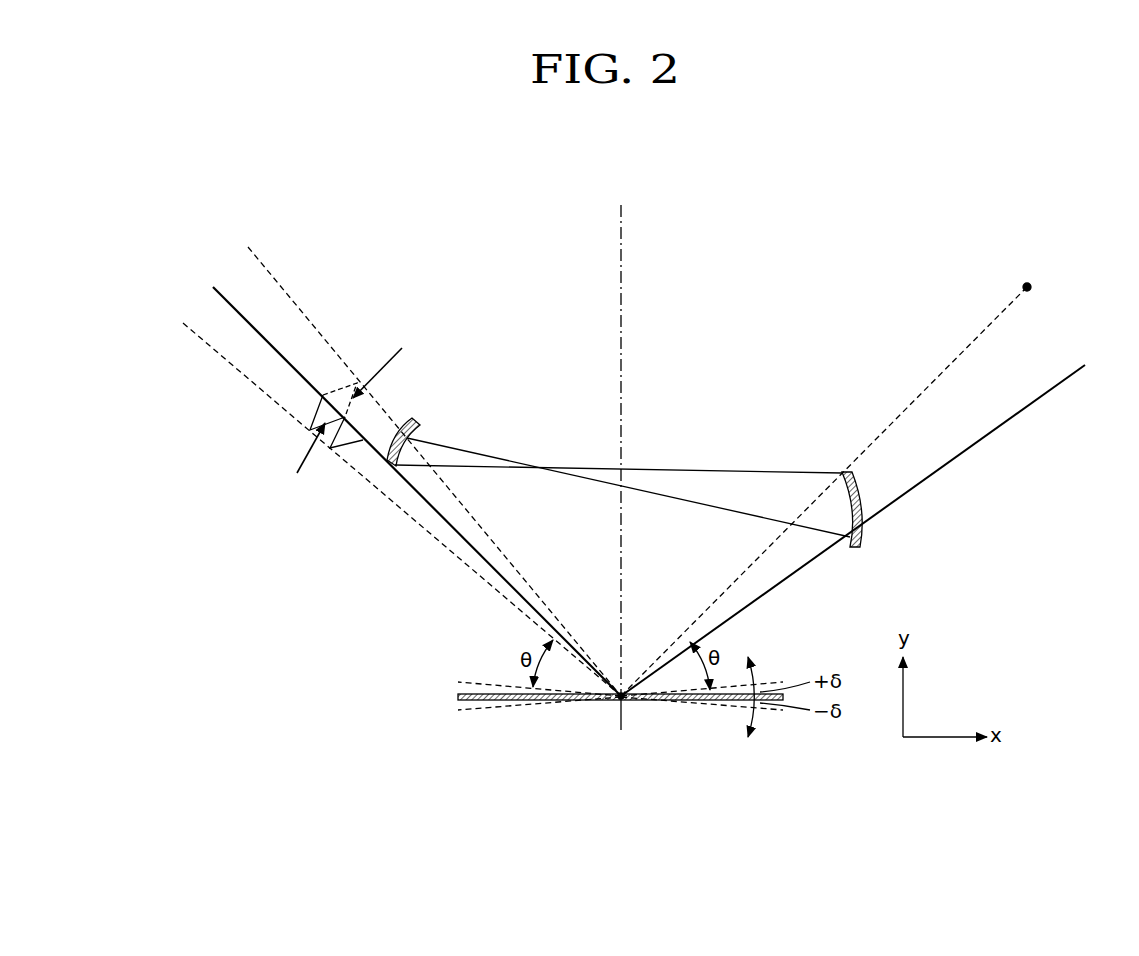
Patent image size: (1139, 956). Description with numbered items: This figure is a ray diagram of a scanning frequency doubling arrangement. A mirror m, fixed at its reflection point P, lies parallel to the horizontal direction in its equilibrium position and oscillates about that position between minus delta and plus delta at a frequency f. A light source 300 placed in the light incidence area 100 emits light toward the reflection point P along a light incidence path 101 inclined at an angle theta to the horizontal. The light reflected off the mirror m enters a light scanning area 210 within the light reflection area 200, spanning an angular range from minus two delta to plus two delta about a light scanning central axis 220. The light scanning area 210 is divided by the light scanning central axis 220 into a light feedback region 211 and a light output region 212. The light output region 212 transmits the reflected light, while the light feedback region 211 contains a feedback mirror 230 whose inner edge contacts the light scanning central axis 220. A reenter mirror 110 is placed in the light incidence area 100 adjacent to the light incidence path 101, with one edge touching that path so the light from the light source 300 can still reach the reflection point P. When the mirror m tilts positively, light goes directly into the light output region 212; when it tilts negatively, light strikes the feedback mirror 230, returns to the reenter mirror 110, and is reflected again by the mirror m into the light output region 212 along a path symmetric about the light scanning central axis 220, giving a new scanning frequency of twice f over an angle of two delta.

The light incidence area 100 is at (1087, 197).
The light incidence path 101 is at (895, 417).
The reenter mirror 110 is at (858, 546).
The light reflection area 200 is at (620, 197).
The light scanning area 210 is at (181, 229).
The light feedback region 211 is at (247, 247).
The light output region 212 is at (212, 278).
The light scanning central axis 220 is at (417, 493).
The feedback mirror 230 is at (405, 414).
The light source 300 is at (1023, 284).
The mirror m is at (458, 693).
The reflection point P is at (620, 725).